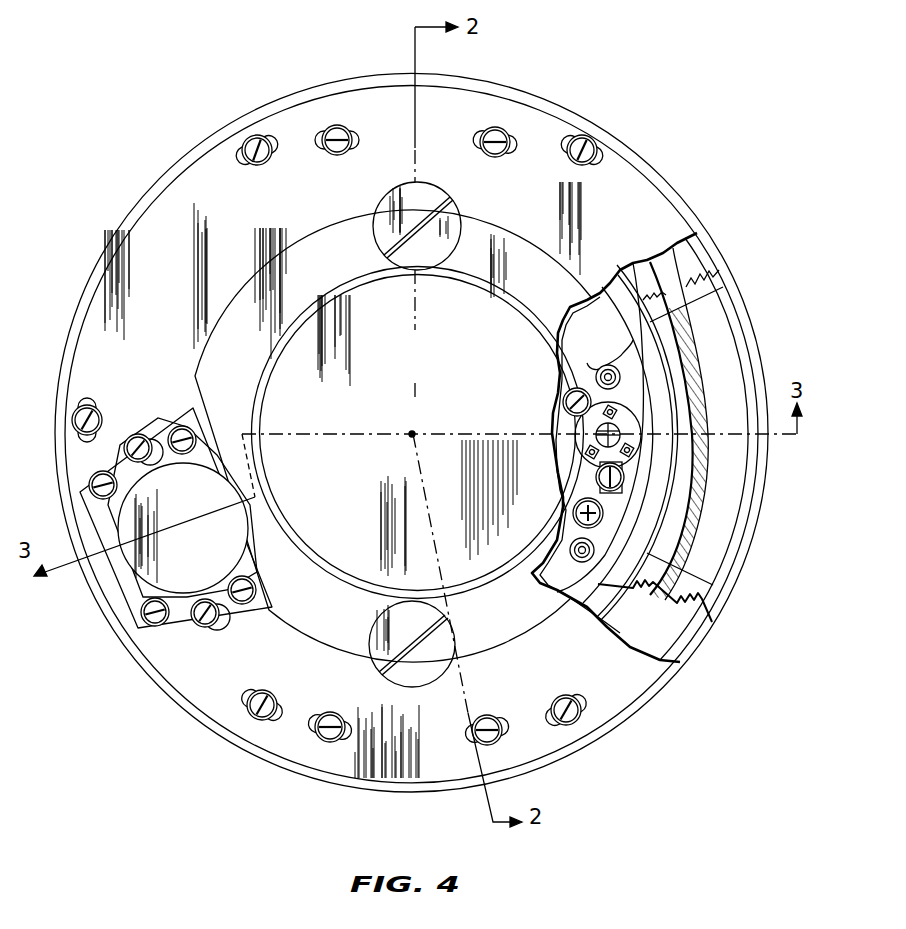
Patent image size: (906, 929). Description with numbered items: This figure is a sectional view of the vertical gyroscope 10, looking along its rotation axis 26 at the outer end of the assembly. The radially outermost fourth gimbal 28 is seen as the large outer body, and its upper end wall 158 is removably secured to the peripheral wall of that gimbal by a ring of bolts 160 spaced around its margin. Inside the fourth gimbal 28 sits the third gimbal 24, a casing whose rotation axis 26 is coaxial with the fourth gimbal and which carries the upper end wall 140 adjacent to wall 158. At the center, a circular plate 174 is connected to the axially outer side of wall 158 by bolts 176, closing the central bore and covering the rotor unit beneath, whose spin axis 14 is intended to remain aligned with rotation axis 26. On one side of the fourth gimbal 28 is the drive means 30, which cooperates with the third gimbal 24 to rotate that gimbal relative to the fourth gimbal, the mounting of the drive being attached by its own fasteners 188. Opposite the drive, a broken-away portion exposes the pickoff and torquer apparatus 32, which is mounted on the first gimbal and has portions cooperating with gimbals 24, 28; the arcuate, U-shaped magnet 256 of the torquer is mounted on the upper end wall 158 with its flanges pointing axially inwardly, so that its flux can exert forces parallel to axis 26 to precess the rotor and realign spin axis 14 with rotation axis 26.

The gyroscope 10 is at (700, 149).
The spin axis 14 is at (416, 432).
The rotation axis 26 is at (519, 431).
The third gimbal 24 is at (606, 603).
The fourth gimbal 28 is at (737, 574).
The drive means 30 is at (224, 569).
The pickoff and torquer apparatus 32 is at (636, 446).
The upper end wall 140 is at (560, 442).
The upper end wall 158 is at (632, 246).
The bolts 160 is at (264, 160).
The circular plate 174 is at (434, 357).
The bolts 176 is at (440, 259).
The bracket screws 188 is at (107, 472).
The magnet 256 is at (729, 553).